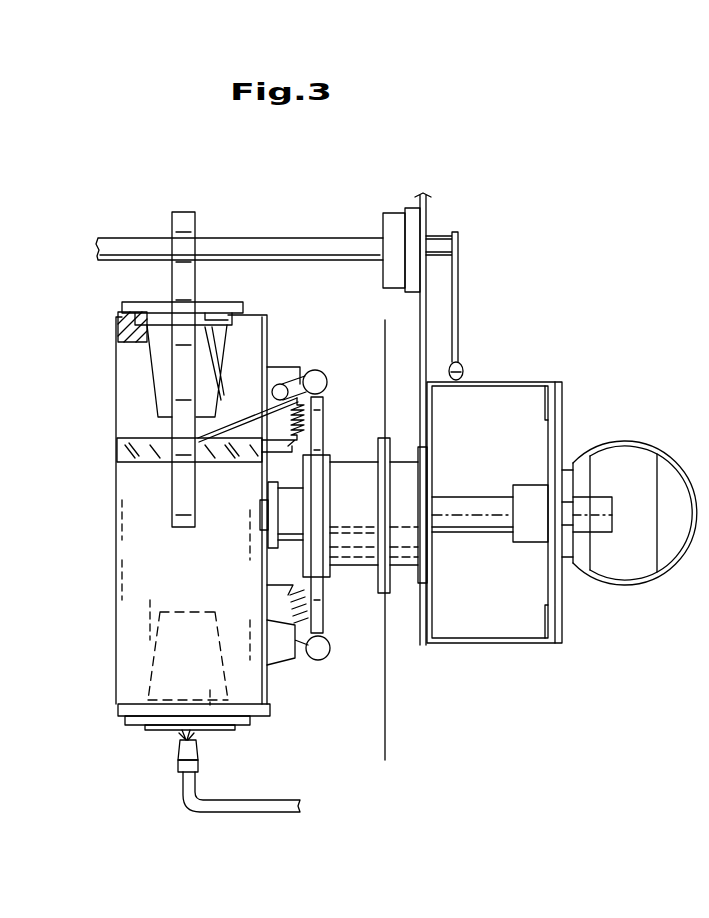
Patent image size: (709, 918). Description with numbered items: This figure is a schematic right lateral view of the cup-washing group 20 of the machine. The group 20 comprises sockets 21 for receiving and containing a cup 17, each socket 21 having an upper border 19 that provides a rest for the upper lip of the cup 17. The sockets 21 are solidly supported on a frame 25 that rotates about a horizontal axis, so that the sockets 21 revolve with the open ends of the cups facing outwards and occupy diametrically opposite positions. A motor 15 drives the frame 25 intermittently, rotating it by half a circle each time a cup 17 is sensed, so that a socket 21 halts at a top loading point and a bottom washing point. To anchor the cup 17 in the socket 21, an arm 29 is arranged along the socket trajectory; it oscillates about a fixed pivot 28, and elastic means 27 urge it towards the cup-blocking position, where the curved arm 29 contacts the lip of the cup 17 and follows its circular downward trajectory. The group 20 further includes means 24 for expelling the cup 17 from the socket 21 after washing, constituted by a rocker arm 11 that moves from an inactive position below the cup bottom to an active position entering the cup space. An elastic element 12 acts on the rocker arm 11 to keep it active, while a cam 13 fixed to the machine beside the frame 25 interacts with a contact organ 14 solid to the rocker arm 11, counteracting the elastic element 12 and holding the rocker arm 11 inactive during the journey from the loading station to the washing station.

The rocker arm 11 is at (238, 432).
The elastic element 12 is at (416, 406).
The cam 13 is at (322, 600).
The contact organ 14 is at (320, 370).
The motor 15 is at (610, 457).
The cup 17 is at (157, 395).
The upper border 19 is at (118, 338).
The cup-washing group 20 is at (357, 216).
The socket 21 is at (150, 730).
The means for expelling the cup 24 is at (335, 418).
The frame 25 is at (262, 678).
The elastic means 27 is at (462, 372).
The fixed pivot 28 is at (213, 243).
The arm 29 is at (178, 282).